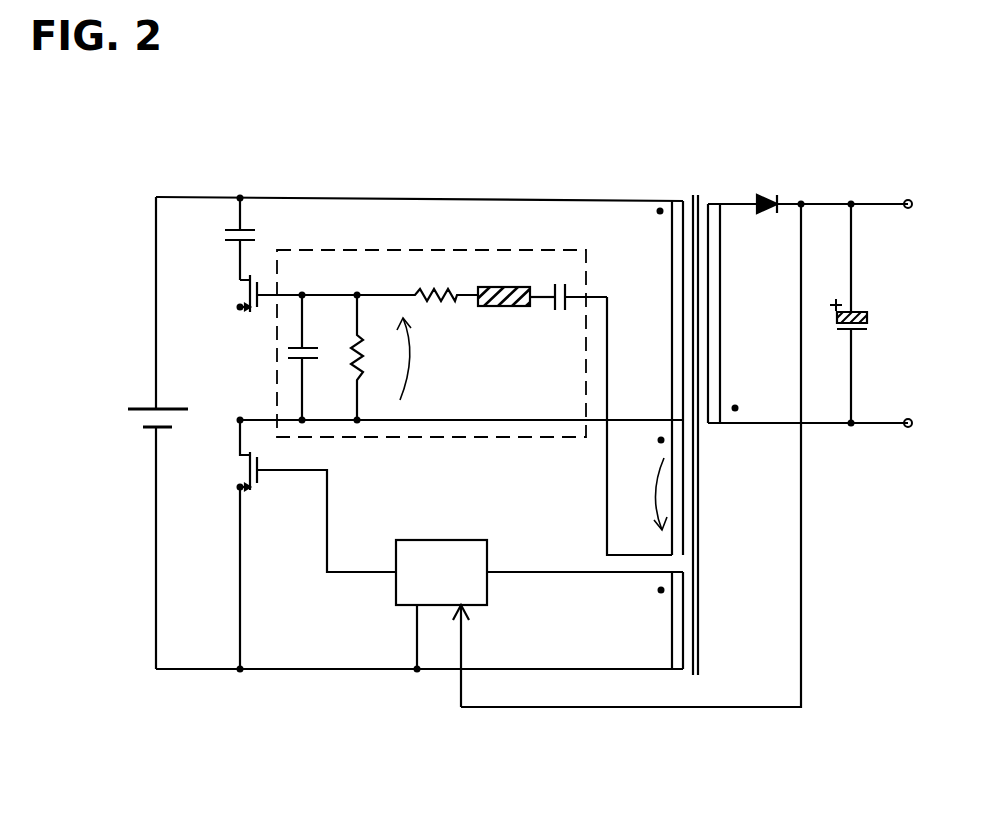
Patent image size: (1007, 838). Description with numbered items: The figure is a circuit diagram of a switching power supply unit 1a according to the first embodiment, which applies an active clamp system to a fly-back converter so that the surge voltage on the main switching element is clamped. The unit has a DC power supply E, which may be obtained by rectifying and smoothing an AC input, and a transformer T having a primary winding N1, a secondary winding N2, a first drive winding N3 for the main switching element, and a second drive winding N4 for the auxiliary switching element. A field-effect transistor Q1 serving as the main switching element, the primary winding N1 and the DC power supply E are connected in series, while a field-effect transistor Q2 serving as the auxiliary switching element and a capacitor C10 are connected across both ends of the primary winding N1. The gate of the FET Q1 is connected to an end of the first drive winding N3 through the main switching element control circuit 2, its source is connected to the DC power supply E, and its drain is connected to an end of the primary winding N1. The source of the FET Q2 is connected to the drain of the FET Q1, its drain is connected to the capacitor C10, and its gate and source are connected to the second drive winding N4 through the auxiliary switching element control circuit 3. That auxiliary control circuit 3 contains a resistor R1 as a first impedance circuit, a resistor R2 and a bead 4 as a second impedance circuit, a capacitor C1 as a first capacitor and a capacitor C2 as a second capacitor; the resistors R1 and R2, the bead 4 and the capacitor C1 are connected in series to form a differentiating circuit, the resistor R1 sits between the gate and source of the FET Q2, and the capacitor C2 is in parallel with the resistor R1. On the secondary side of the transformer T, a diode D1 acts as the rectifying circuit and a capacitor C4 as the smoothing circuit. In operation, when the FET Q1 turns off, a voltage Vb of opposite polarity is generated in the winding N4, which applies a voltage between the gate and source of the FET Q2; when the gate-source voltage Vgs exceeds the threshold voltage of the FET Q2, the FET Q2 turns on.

The switching power supply unit 1a is at (746, 128).
The main switching element control circuit 2 is at (452, 548).
The auxiliary switching element control circuit 3 is at (352, 268).
The bead 4 is at (512, 283).
The DC power supply E is at (147, 401).
The capacitor C10 is at (213, 239).
The field-effect transistor (auxiliary switching element) Q2 is at (248, 293).
The field-effect transistor (main switching element) Q1 is at (227, 544).
The capacitor (second capacitor) C2 is at (316, 357).
The resistor (first impedance circuit) R1 is at (376, 357).
The resistor (second impedance circuit) R2 is at (390, 280).
The capacitor (first capacitor) C1 is at (574, 312).
The gate-source voltage Vgs is at (432, 359).
The transformer T is at (696, 422).
The primary winding N1 is at (659, 310).
The secondary winding N2 is at (810, 315).
The main switching element drive winding (first drive winding) N3 is at (658, 620).
The auxiliary switching element drive winding (second drive winding) N4 is at (678, 497).
The voltage generated in winding N4 Vb is at (642, 494).
The diode (rectifying circuit) D1 is at (831, 222).
The capacitor (smoothing circuit) C4 is at (844, 313).